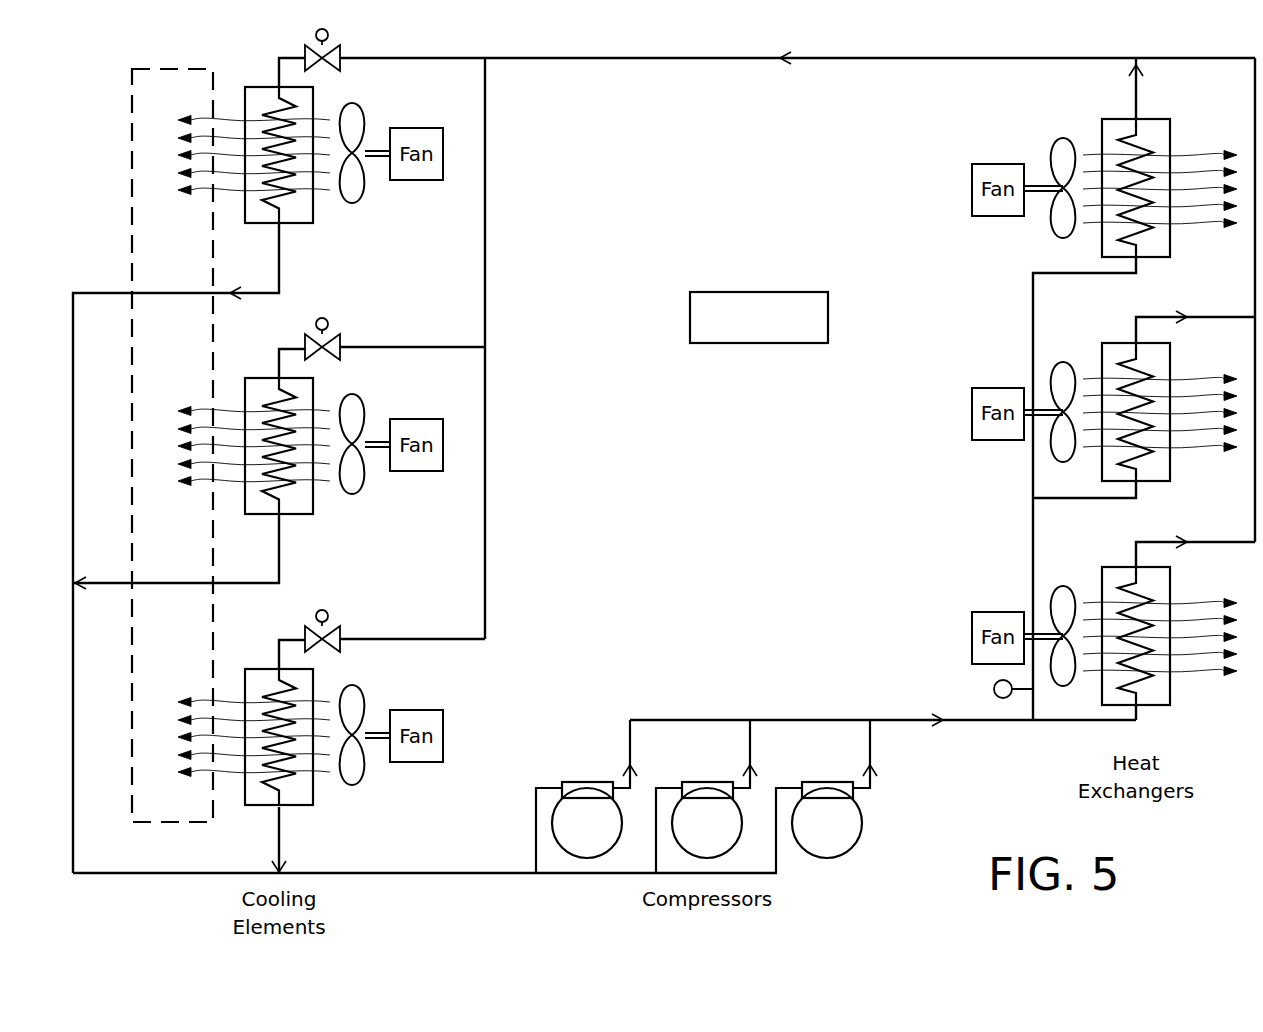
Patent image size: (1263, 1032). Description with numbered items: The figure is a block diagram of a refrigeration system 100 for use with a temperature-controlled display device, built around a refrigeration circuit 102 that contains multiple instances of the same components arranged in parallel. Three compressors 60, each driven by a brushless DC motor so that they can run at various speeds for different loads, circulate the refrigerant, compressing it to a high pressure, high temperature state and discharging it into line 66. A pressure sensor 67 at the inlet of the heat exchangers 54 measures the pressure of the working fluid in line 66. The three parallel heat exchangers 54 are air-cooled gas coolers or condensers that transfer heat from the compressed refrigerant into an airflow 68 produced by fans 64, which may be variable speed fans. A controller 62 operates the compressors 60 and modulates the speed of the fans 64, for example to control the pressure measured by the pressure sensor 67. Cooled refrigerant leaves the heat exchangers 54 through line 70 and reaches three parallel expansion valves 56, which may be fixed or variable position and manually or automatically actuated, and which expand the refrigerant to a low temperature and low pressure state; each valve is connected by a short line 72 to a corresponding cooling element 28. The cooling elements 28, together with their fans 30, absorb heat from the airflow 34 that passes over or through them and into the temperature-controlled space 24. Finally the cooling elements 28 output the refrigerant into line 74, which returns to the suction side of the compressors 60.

The refrigeration system 100 is at (82, 93).
The temperature-controlled space 24 is at (186, 74).
The cooling element 28 is at (253, 93).
The fan 30 is at (434, 135).
The airflow 34 is at (200, 194).
The expansion valve 56 is at (329, 32).
The refrigerant supply line to cooling element 72 is at (289, 56).
The line 70 is at (956, 56).
The refrigeration circuit 102 is at (928, 106).
The controller 62 is at (819, 298).
The heat exchanger 54 is at (1162, 124).
The fan 64 is at (980, 170).
The airflow 68 is at (1204, 155).
The compressor 60 is at (569, 786).
The line 66 is at (845, 719).
The pressure sensor 67 is at (993, 689).
The line 74 is at (407, 872).